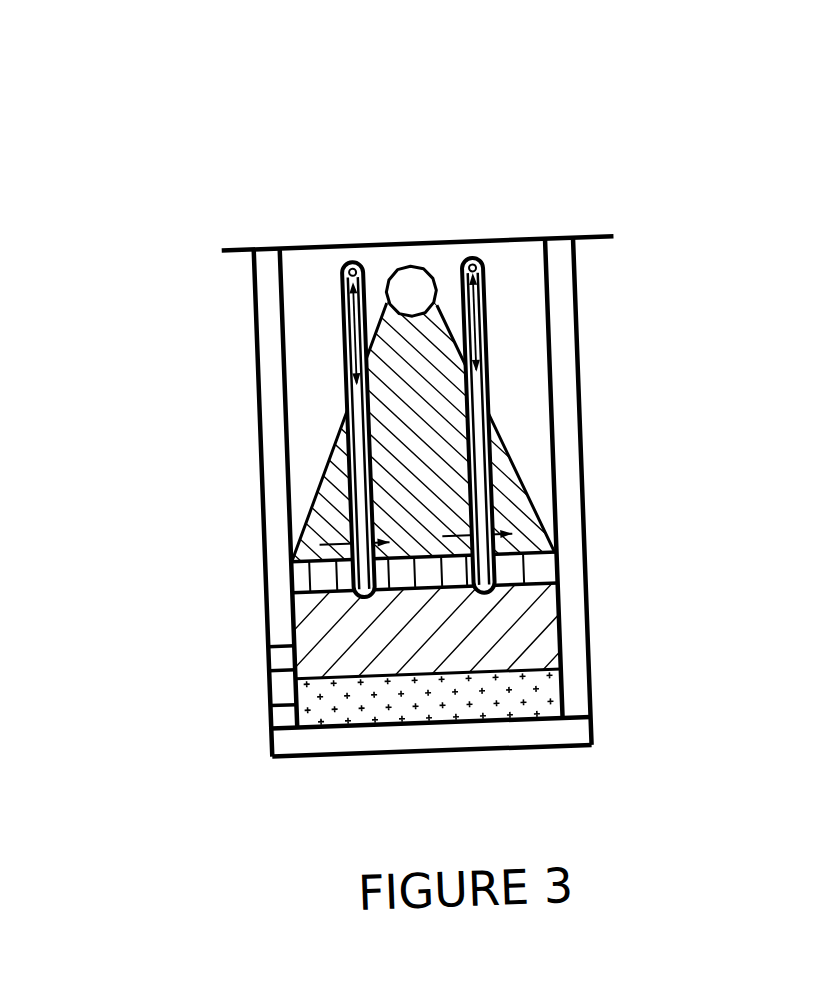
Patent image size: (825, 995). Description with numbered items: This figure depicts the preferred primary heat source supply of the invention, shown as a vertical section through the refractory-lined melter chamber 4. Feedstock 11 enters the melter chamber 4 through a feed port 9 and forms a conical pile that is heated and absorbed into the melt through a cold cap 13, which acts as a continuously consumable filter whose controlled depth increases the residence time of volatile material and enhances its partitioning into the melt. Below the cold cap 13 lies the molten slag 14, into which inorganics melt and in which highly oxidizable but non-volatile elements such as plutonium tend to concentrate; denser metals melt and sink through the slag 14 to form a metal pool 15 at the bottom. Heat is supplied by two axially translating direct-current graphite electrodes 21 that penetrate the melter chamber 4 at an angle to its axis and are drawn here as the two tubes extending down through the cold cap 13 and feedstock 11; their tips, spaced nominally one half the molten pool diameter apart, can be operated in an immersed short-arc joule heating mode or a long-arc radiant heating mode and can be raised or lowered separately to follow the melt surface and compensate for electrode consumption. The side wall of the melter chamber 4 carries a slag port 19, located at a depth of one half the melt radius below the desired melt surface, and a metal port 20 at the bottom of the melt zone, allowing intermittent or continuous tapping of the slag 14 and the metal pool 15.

The melter chamber 4 is at (653, 442).
The feed port 9 is at (388, 302).
The feedstock 11 is at (425, 407).
The cold cap 13 is at (537, 566).
The molten slag 14 is at (510, 627).
The metal pool 15 is at (518, 698).
The slag port 19 is at (268, 653).
The metal port 20 is at (268, 718).
The graphite electrodes 21 is at (475, 250).